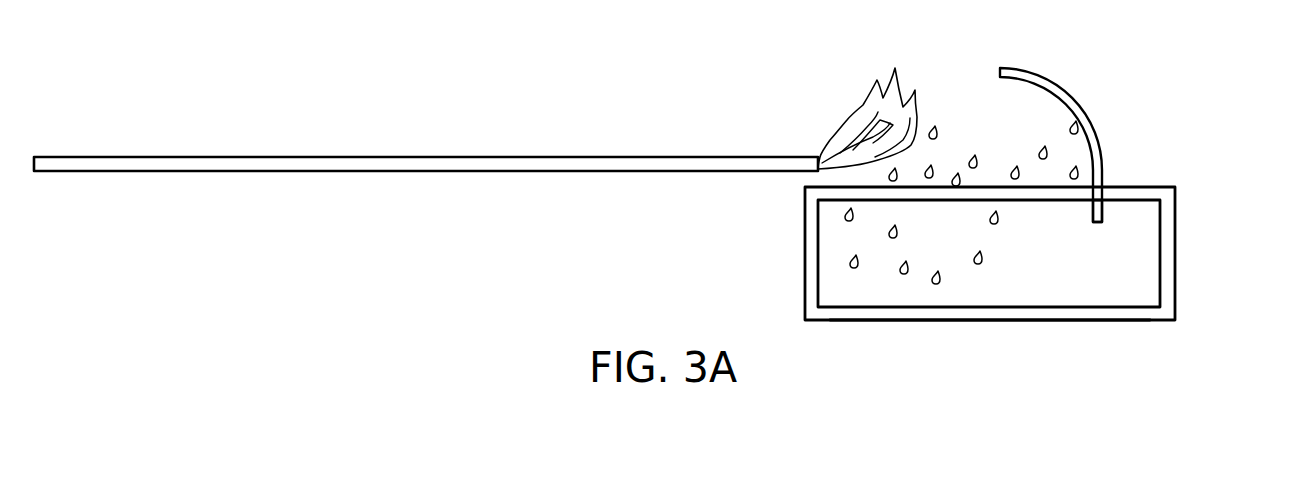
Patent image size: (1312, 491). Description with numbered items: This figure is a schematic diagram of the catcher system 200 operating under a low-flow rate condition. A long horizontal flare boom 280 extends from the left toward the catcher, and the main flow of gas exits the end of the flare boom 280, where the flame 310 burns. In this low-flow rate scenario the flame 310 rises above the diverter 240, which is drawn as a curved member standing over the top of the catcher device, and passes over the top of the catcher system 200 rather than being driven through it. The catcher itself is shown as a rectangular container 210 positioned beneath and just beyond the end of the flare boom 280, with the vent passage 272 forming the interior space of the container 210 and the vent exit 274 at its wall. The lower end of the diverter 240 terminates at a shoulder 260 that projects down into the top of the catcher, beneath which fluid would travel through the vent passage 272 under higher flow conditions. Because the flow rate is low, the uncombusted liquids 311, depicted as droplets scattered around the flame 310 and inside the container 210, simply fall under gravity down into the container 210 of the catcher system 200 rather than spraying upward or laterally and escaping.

The catcher system 200 is at (1194, 200).
The container 210 is at (914, 330).
The diverter 240 is at (1068, 74).
The shoulder 260 is at (1091, 213).
The vent passage 272 is at (1106, 287).
The vent exit 274 is at (1130, 210).
The flare boom 280 is at (377, 157).
The flame 310 is at (852, 119).
The uncombusted liquids 311 is at (997, 237).